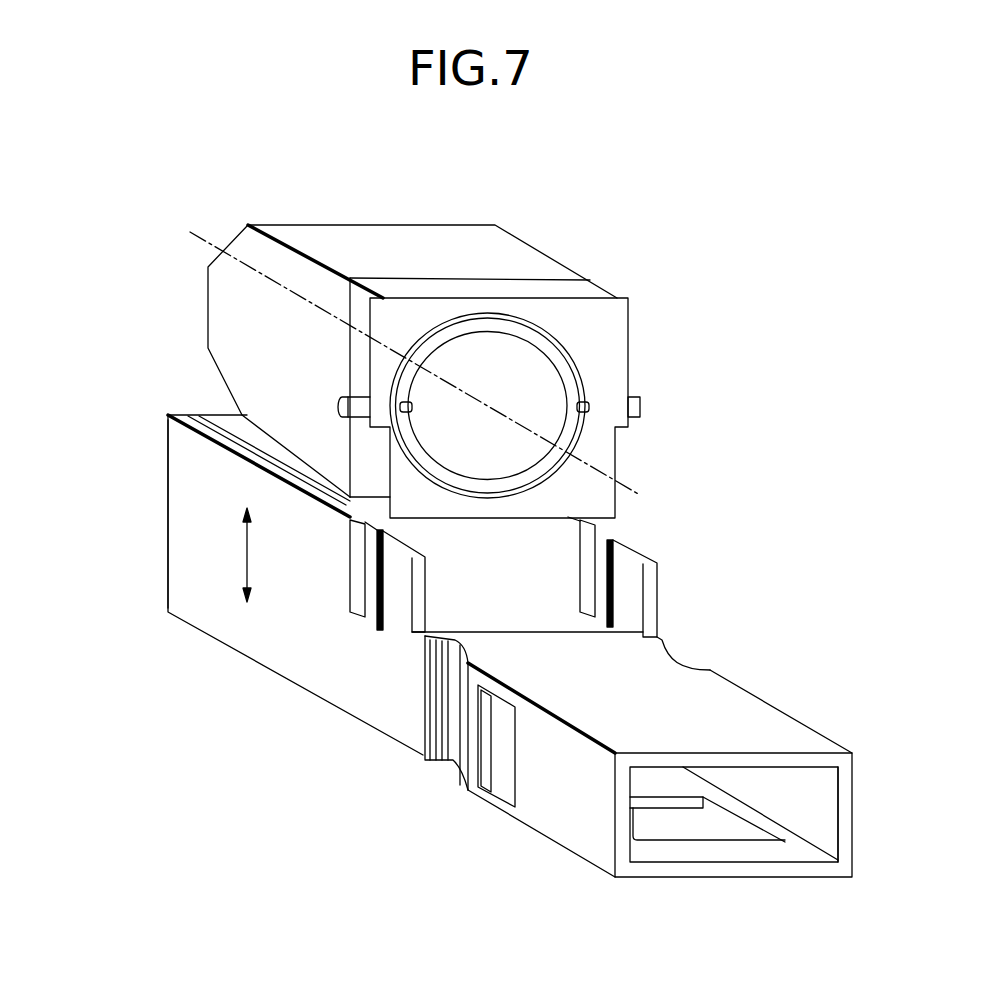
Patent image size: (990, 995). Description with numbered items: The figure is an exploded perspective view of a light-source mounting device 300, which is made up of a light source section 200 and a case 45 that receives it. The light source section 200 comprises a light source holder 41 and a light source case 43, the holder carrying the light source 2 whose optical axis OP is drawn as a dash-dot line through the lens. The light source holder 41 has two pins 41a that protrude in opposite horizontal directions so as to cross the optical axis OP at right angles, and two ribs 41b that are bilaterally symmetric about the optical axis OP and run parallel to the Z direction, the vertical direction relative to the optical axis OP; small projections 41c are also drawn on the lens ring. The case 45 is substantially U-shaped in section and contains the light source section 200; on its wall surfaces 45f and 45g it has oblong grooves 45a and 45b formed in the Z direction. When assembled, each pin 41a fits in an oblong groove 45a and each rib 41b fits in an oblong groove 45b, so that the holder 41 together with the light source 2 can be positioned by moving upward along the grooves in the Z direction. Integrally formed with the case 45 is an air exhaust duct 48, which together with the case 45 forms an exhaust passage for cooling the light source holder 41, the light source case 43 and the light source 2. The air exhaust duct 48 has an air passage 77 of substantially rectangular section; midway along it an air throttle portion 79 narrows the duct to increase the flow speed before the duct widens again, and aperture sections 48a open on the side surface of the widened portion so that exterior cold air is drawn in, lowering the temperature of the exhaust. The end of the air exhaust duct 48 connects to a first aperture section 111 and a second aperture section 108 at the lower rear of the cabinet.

The light source 2 is at (473, 333).
The light source holder 41 is at (593, 290).
The pin 41a is at (332, 405).
The rib 41b is at (402, 313).
The lens ring projection 41c is at (410, 414).
The light source case 43 is at (530, 238).
The case 45 is at (222, 630).
The oblong groove 45a is at (355, 590).
The oblong groove 45b is at (380, 632).
The wall surface 45f is at (165, 532).
The wall surface 45g is at (552, 536).
The air exhaust duct 48 is at (748, 704).
The aperture section 48a is at (508, 777).
The air passage 77 is at (822, 823).
The air throttle portion 79 is at (685, 656).
The second aperture section 108 is at (687, 843).
The first aperture section 111 is at (828, 799).
The light source section 200 is at (655, 311).
The light-source mounting device 300 is at (343, 765).
The optical axis OP is at (192, 232).
The Z direction Z is at (260, 555).